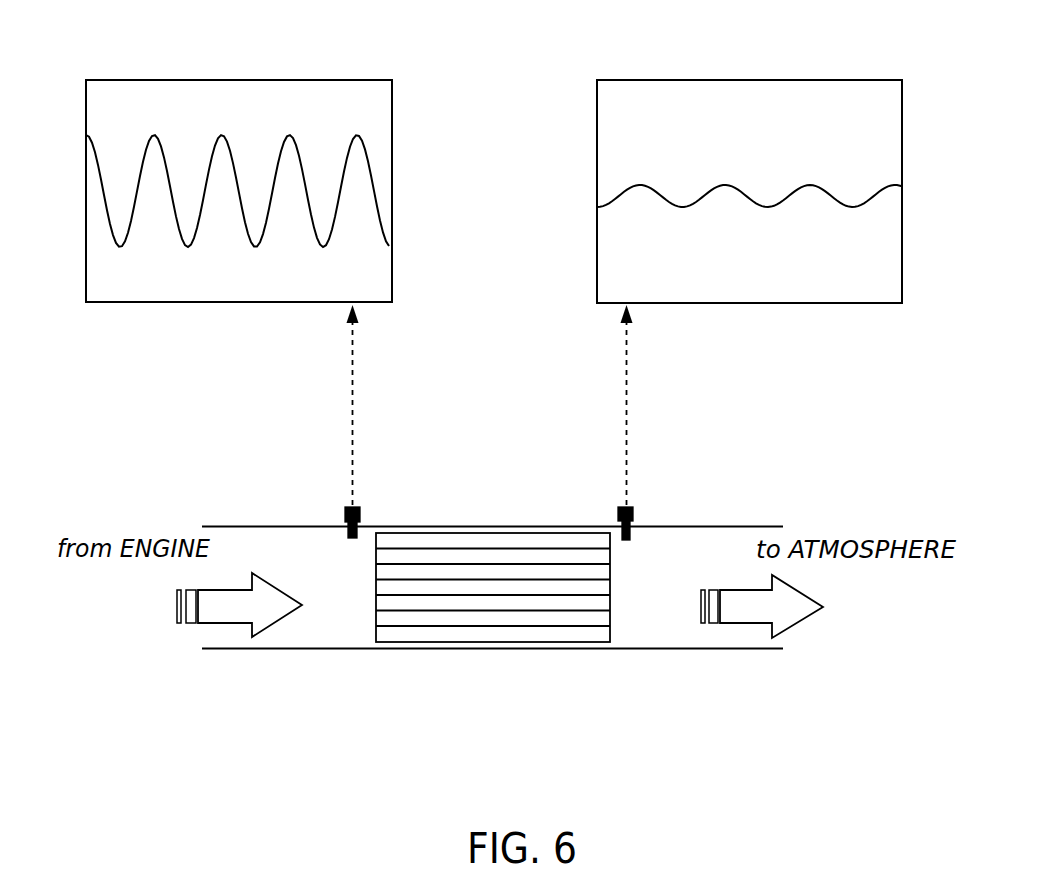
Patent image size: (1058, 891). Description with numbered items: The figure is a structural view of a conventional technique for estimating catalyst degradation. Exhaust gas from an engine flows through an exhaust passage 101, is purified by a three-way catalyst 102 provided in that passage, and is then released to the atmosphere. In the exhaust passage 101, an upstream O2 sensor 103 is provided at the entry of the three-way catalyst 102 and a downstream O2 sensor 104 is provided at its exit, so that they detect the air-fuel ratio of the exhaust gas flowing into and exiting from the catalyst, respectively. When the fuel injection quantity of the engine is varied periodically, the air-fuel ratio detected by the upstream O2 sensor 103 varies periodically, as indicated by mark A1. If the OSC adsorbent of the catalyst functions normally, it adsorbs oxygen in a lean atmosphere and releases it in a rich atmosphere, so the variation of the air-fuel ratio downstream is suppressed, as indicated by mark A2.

The exhaust passage 101 is at (347, 638).
The three-way catalyst 102 is at (493, 628).
The O2 sensor 103 is at (361, 515).
The O2 sensor 104 is at (635, 512).
The mark A1 is at (357, 93).
The mark A2 is at (872, 92).